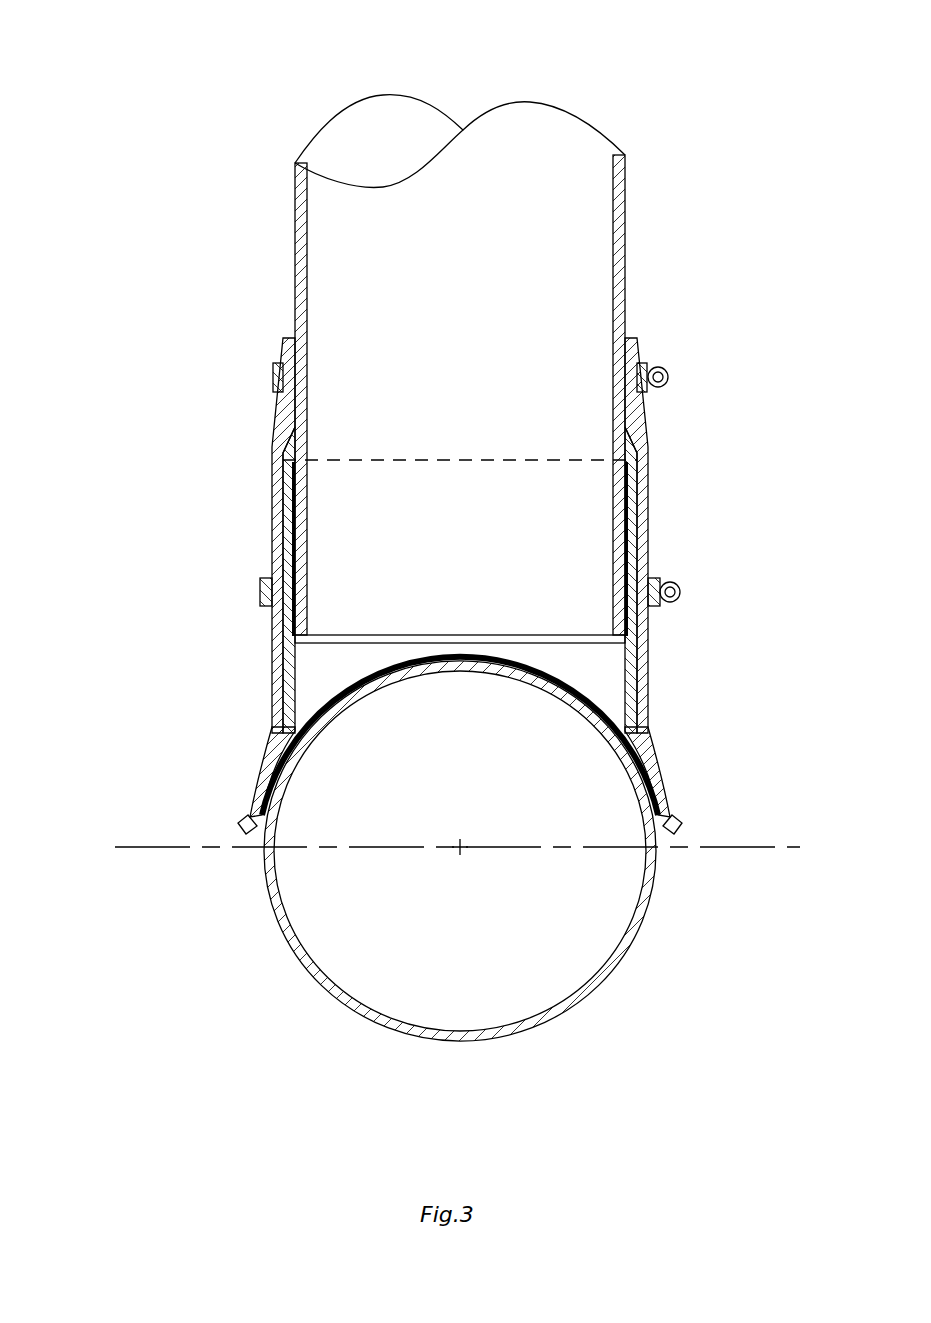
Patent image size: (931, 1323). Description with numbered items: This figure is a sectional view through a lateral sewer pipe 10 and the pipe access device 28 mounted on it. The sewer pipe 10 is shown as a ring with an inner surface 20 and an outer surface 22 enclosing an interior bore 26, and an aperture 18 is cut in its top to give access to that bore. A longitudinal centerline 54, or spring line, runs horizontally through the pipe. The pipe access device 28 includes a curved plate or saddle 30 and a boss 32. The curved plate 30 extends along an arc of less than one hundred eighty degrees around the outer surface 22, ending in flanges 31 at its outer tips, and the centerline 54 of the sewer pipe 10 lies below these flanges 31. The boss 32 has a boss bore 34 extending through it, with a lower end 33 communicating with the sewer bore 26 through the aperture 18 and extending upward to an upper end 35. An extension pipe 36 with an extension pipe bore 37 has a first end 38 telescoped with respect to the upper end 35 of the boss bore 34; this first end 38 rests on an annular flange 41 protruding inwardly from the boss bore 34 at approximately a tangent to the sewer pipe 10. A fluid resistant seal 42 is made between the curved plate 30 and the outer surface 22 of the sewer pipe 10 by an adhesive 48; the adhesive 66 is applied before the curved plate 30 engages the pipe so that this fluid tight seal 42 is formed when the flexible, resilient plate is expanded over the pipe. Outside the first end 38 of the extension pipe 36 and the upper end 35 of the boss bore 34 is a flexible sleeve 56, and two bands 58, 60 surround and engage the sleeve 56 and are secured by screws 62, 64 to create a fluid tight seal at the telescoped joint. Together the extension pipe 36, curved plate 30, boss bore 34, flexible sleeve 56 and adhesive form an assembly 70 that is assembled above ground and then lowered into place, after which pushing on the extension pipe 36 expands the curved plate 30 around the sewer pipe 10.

The lateral sewer pipe 10 is at (284, 948).
The aperture 18 is at (617, 730).
The inner surface 20 is at (316, 963).
The outer surface 22 is at (323, 987).
The interior bore 26 is at (469, 907).
The pipe access device 28 is at (264, 750).
The curved plate 30 is at (266, 782).
The flange 31 is at (243, 823).
The boss 32 is at (633, 530).
The lower end 33 is at (600, 655).
The boss bore 34 is at (323, 672).
The upper end 35 is at (462, 458).
The extension pipe 36 is at (298, 142).
The extension pipe bore 37 is at (342, 290).
The first end 38 is at (614, 497).
The annular flange 41 is at (430, 640).
The fluid resistant seal 42 is at (352, 678).
The adhesive 48 is at (523, 652).
The longitudinal centerline 54 is at (150, 845).
The flexible sleeve 56 is at (277, 508).
The band 58 is at (272, 368).
The band 60 is at (262, 607).
The screw 62 is at (667, 372).
The screw 64 is at (679, 587).
The adhesive 66 is at (297, 546).
The assembly 70 is at (390, 60).